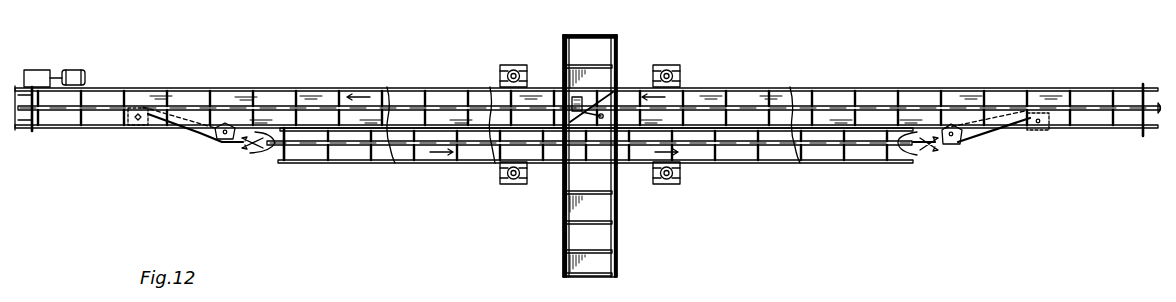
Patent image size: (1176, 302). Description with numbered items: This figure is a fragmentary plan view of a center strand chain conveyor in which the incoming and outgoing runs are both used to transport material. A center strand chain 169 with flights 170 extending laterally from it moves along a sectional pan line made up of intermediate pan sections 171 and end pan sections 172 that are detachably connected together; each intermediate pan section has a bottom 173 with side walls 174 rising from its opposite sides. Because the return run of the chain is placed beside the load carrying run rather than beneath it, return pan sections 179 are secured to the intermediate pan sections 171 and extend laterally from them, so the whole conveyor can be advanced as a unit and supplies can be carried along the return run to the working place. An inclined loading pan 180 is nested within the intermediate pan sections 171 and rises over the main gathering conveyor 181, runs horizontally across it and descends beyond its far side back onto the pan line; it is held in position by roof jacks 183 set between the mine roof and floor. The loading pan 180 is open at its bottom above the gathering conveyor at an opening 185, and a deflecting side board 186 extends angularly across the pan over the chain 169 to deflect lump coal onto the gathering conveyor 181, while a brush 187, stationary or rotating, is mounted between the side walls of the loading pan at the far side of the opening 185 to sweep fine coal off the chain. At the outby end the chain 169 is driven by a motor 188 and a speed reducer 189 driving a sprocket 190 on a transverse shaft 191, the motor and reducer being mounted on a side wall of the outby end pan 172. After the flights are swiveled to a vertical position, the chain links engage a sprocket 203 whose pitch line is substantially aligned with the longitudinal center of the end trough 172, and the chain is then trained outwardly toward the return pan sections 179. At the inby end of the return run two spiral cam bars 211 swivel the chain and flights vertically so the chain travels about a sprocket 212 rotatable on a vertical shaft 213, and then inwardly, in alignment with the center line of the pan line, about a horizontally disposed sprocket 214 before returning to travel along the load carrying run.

The center strand chain 169 is at (95, 105).
The flights 170 is at (208, 90).
The intermediate pan sections 171 is at (432, 92).
The end pan sections 172 is at (115, 127).
The bottom 173 is at (443, 95).
The side walls 174 is at (322, 125).
The return pan sections 179 is at (788, 163).
The loading pan 180 is at (555, 96).
The main gathering conveyor 181 is at (563, 240).
The roof jacks 183 is at (523, 66).
The opening 185 is at (603, 114).
The deflecting side board 186 is at (613, 92).
The brush 187 is at (580, 97).
The motor 188 is at (78, 70).
The speed reducer 189 is at (46, 70).
The sprocket 190 is at (28, 110).
The transverse shaft 191 is at (22, 125).
The sprocket 203 is at (145, 126).
The spiral cam bars 211 is at (913, 158).
The sprocket 212 is at (968, 140).
The vertical shaft 213 is at (951, 132).
The horizontally disposed sprocket 214 is at (1036, 130).